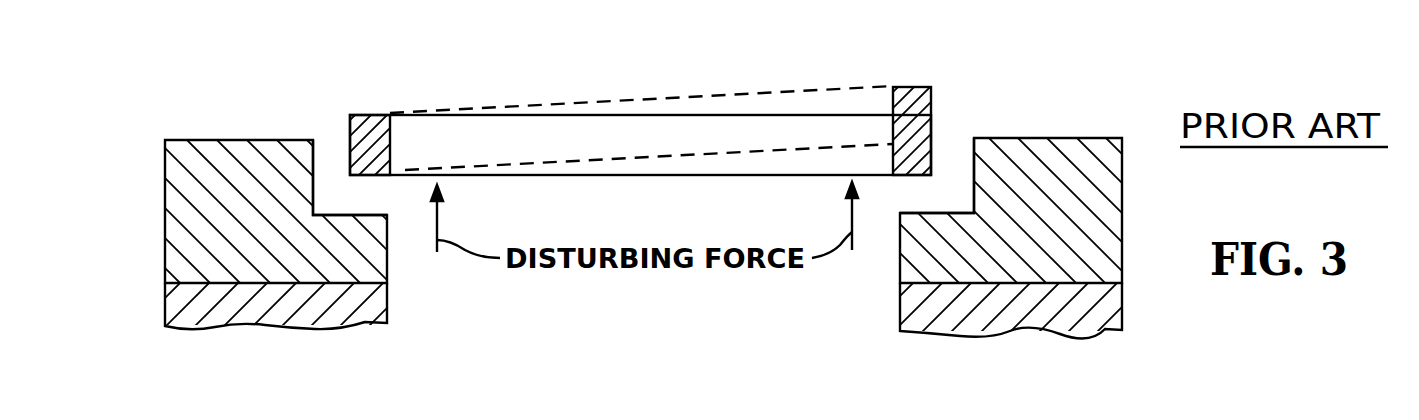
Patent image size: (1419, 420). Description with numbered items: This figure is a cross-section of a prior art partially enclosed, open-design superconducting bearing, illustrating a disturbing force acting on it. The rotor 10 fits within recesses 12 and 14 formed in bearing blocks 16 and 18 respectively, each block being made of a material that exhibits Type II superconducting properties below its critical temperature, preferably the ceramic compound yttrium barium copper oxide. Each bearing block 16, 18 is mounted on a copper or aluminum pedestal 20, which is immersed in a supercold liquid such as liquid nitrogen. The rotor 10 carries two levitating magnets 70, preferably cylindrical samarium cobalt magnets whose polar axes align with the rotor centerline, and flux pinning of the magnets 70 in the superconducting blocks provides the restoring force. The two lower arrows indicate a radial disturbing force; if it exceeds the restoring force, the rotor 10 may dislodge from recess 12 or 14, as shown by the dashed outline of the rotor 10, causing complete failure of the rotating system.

The rotor 10 is at (630, 100).
The recess 12 is at (322, 160).
The recess 14 is at (966, 163).
The bearing block 16 is at (165, 187).
The bearing block 18 is at (1122, 263).
The pedestal 20 is at (165, 310).
The levitating magnet 70 is at (362, 112).